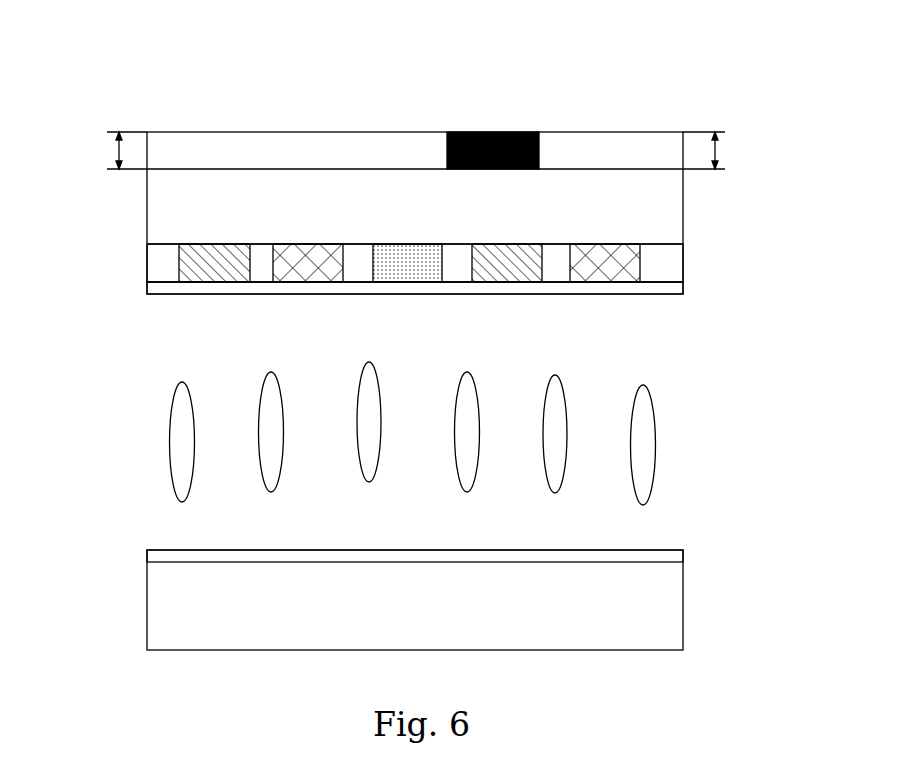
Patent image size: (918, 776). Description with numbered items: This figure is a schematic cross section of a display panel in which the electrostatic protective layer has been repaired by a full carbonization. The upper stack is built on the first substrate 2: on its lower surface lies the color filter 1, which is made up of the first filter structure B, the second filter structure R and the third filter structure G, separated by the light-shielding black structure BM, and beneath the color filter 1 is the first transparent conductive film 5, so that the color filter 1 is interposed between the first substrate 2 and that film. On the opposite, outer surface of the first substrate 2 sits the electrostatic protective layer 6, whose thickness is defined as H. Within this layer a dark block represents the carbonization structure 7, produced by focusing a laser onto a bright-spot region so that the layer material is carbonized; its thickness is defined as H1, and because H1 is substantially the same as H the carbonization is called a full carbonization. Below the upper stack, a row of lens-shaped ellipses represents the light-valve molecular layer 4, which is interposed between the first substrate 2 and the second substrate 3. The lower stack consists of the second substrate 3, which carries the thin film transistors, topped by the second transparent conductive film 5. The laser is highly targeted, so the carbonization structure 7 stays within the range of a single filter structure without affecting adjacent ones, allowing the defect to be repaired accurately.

The color filter 1 is at (683, 257).
The first substrate 2 is at (673, 220).
The second substrate 3 is at (672, 615).
The light-valve molecular layer 4 is at (672, 445).
The transparent conductive film 5 is at (675, 290).
The electrostatic protective layer 6 is at (270, 140).
The carbonization structure 7 is at (497, 135).
The black structure BM is at (168, 273).
The second filter structure R is at (218, 273).
The third filter structure G is at (305, 265).
The first filter structure B is at (408, 265).
The thickness of the electrostatic protective layer H is at (110, 150).
The thickness of the carbonization structure H1 is at (722, 150).